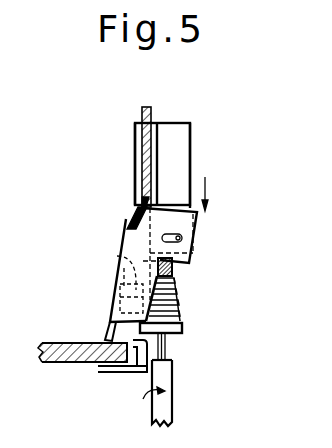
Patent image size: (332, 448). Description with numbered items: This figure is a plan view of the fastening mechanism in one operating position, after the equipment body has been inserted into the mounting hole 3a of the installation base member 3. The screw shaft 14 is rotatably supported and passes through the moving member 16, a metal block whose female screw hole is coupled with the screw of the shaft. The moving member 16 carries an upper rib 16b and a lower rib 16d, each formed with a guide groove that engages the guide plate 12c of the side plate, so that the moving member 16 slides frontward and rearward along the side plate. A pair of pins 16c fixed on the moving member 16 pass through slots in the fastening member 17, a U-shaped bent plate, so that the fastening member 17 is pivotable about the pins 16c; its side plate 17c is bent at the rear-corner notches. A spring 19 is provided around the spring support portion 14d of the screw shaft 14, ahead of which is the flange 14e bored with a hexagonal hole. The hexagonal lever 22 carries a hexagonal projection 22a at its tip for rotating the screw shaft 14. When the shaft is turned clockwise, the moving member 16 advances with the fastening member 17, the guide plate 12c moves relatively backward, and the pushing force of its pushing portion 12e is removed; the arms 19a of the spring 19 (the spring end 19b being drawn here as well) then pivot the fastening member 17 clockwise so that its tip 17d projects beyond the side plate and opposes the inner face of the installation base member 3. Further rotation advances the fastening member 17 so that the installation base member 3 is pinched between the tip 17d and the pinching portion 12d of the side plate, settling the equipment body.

The installation base member 3 is at (60, 363).
The mounting hole 3a is at (132, 379).
The guide plate 12c is at (151, 109).
The pinching portion 12d is at (102, 372).
The pushing portion 12e is at (134, 192).
The screw shaft 14 is at (178, 277).
The spring support portion 14d is at (183, 325).
The flange 14e is at (168, 342).
The moving member 16 is at (175, 178).
The upper rib 16b is at (134, 147).
The pin 16c is at (183, 238).
The lower rib 16d is at (183, 150).
The fastening member 17 is at (188, 266).
The side plate of fastening member 17c is at (128, 213).
The tip 17d is at (106, 341).
The spring 19 is at (181, 307).
The arm 19a is at (118, 305).
The spring upper end 19b is at (117, 256).
The hexagonal lever 22 is at (173, 400).
The hexagonal projection 22a is at (167, 348).